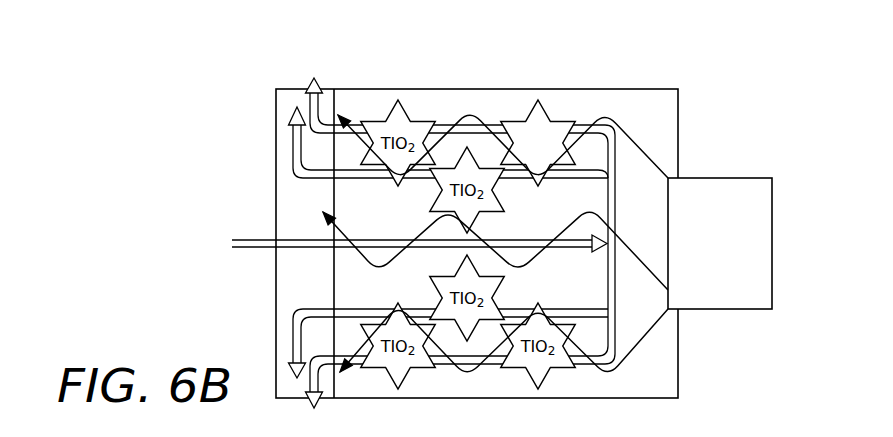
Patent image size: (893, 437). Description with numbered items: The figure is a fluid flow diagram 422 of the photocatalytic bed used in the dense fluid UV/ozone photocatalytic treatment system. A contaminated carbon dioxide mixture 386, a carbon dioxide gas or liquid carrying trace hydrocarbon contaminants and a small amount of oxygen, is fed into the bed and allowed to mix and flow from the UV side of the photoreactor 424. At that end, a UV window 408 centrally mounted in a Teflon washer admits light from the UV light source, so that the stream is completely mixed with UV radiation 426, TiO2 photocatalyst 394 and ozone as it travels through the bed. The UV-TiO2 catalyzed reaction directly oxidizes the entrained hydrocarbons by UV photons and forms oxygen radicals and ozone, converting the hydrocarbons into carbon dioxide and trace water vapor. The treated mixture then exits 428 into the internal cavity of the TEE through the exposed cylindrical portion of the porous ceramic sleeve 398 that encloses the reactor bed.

The fluid flow diagram 422 is at (233, 145).
The porous ceramic sleeve 398 is at (280, 110).
The exit 428 is at (316, 79).
The UV side of the photoreactor 424 is at (610, 251).
The contaminated carbon dioxide mixture 386 is at (183, 233).
The TiO2 photocatalyst 394 is at (531, 117).
The UV radiation 426 is at (656, 360).
The UV window 408 is at (742, 186).